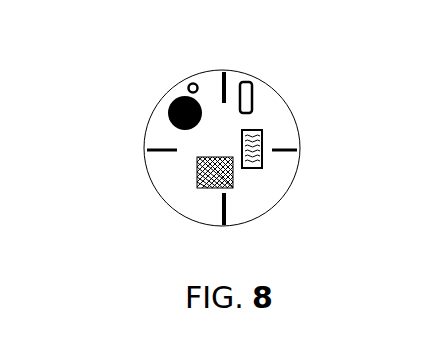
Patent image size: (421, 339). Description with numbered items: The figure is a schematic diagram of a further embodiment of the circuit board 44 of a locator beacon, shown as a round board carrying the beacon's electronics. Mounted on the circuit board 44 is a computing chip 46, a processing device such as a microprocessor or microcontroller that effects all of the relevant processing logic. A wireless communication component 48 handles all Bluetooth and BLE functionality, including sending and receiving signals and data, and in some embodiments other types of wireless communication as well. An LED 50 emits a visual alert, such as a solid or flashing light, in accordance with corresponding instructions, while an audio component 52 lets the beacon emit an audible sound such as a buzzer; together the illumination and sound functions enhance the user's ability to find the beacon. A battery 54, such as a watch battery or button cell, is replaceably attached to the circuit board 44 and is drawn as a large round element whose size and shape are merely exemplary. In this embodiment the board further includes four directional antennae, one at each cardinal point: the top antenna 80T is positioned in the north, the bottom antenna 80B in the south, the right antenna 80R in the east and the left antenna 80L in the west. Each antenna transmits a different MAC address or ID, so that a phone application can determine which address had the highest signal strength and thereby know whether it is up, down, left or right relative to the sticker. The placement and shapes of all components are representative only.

The circuit board 44 is at (162, 190).
The computing chip 46 is at (230, 178).
The wireless communication component 48 is at (262, 166).
The LED 50 is at (252, 98).
The audio component 52 is at (188, 88).
The battery 54 is at (168, 113).
The top antenna 80T is at (228, 75).
The bottom antenna 80B is at (222, 212).
The left antenna 80L is at (147, 150).
The right antenna 80R is at (297, 148).